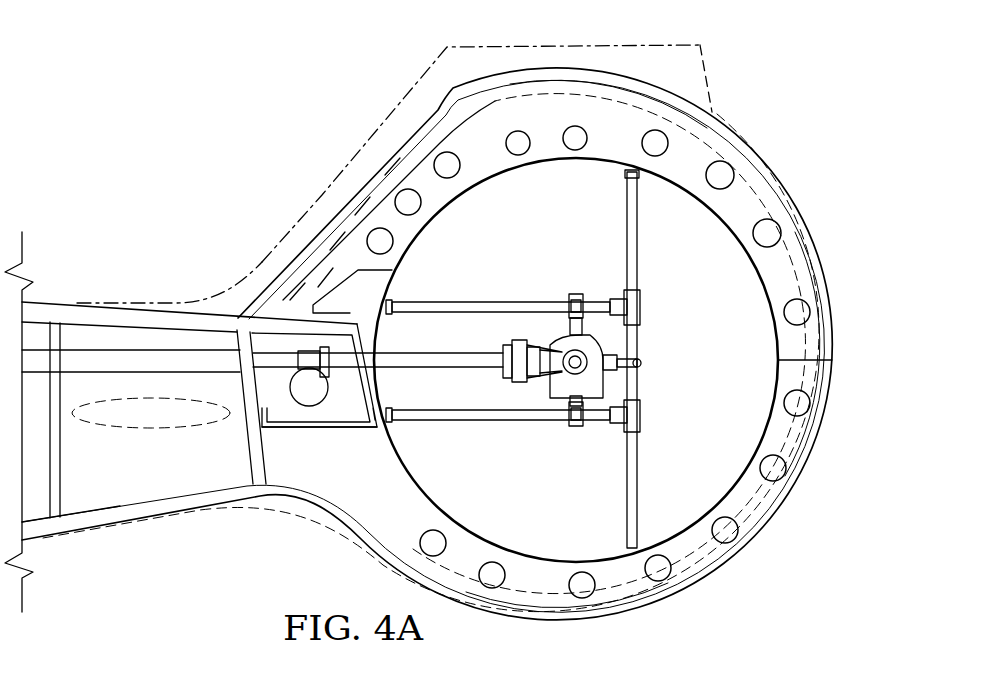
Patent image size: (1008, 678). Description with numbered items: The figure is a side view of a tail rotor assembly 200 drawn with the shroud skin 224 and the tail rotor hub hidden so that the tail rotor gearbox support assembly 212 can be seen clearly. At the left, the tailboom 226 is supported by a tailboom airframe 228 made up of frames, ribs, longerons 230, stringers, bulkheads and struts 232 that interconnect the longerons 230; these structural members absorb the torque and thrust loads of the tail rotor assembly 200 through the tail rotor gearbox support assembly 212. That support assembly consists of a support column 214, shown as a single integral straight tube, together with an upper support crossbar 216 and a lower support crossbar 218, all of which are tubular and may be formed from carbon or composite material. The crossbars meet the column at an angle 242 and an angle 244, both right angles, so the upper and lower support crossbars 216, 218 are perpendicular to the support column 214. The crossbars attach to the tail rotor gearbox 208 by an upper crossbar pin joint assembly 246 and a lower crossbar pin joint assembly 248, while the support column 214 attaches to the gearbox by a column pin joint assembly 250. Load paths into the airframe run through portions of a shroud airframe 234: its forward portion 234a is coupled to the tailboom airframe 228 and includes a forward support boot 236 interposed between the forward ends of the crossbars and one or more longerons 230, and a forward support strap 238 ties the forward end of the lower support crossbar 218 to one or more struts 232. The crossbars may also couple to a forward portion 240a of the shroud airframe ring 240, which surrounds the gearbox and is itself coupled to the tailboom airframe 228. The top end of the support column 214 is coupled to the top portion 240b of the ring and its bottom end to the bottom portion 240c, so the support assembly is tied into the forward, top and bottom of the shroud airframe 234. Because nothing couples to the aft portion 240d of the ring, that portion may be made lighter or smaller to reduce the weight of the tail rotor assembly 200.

The tail rotor assembly 200 is at (172, 125).
The tail rotor gearbox 208 is at (600, 337).
The tail rotor gearbox support assembly 212 is at (644, 479).
The support column 214 is at (626, 212).
The upper support crossbar 216 is at (462, 301).
The lower support crossbar 218 is at (462, 421).
The shroud skin 224 is at (386, 106).
The tailboom 226 is at (178, 310).
The tailboom airframe 228 is at (112, 512).
The longerons 230 is at (80, 300).
The struts 232 is at (247, 450).
The shroud airframe 234 is at (388, 175).
The forward portion of shroud airframe 234a is at (388, 176).
The forward support boot 236 is at (338, 302).
The forward support strap 238 is at (320, 430).
The shroud airframe ring 240 is at (747, 193).
The forward portion of shroud airframe ring 240a is at (352, 220).
The top portion of shroud airframe ring 240b is at (600, 80).
The bottom portion of shroud airframe ring 240c is at (620, 600).
The aft portion of shroud airframe ring 240d is at (812, 377).
The angle 242 is at (616, 287).
The angle 244 is at (616, 433).
The upper crossbar pin joint assembly 246 is at (569, 298).
The lower crossbar pin joint assembly 248 is at (569, 420).
The column pin joint assembly 250 is at (640, 366).